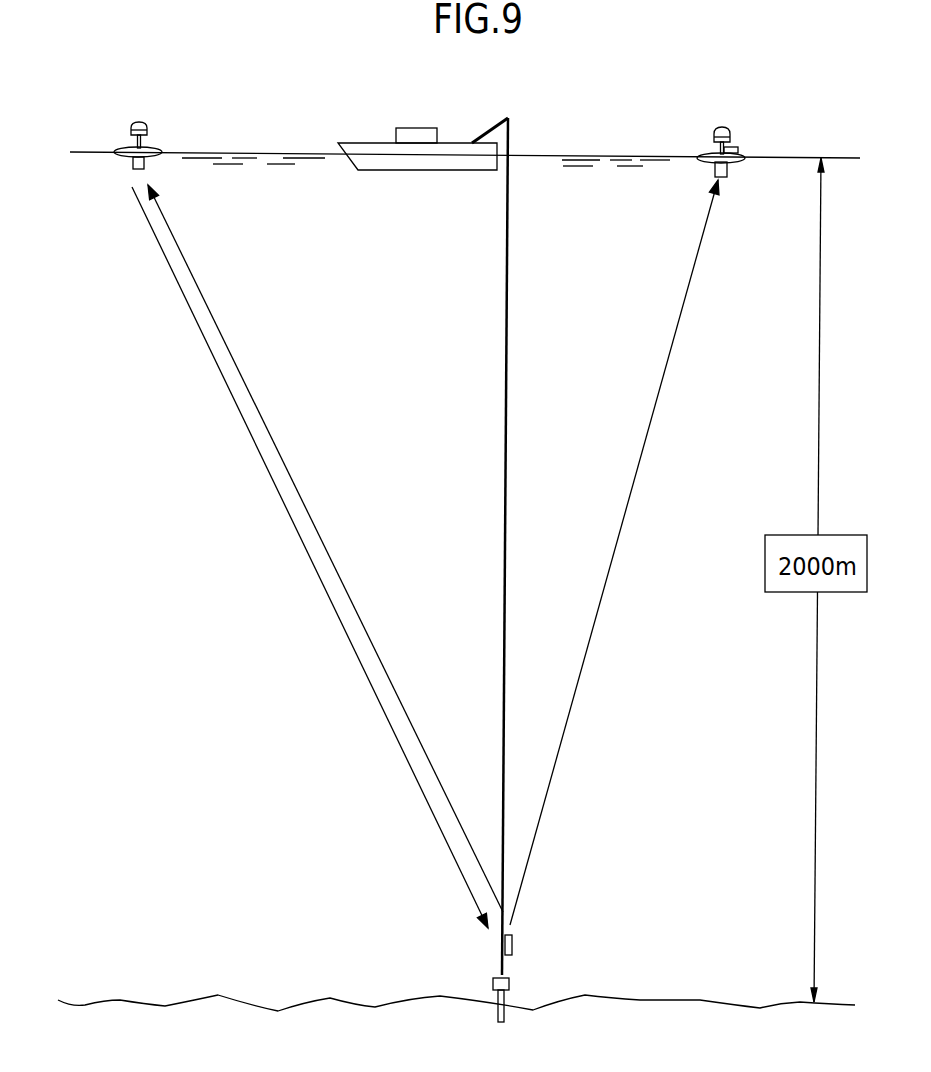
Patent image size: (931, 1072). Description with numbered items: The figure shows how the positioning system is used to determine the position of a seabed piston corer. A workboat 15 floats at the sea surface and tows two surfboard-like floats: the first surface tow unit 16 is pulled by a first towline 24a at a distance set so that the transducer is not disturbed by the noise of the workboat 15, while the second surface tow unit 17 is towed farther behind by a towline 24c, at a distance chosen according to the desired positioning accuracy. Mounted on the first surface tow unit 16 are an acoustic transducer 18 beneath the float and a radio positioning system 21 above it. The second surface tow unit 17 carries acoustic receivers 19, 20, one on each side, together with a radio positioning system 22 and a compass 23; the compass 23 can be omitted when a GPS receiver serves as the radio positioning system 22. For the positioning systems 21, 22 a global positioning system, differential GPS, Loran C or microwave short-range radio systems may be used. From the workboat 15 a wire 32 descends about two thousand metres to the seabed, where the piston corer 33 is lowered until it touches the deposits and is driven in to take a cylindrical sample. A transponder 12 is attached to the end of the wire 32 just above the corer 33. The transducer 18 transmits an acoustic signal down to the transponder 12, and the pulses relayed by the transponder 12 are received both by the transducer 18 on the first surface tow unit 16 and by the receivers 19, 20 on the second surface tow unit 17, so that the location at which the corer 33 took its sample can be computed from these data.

The transponder 12 is at (513, 946).
The workboat 15 is at (367, 143).
The first surface tow unit 16 is at (125, 150).
The second surface tow unit 17 is at (705, 153).
The acoustic transducer 18 is at (145, 168).
The acoustic receiver 19 is at (761, 182).
The acoustic receiver 20 is at (728, 172).
The radio positioning system 21 is at (143, 122).
The radio positioning system 22 is at (727, 128).
The compass 23 is at (738, 150).
The first towline 24a is at (269, 152).
The sea surface wave region 24c is at (597, 157).
The wire 32 is at (506, 495).
The piston corer 33 is at (509, 999).